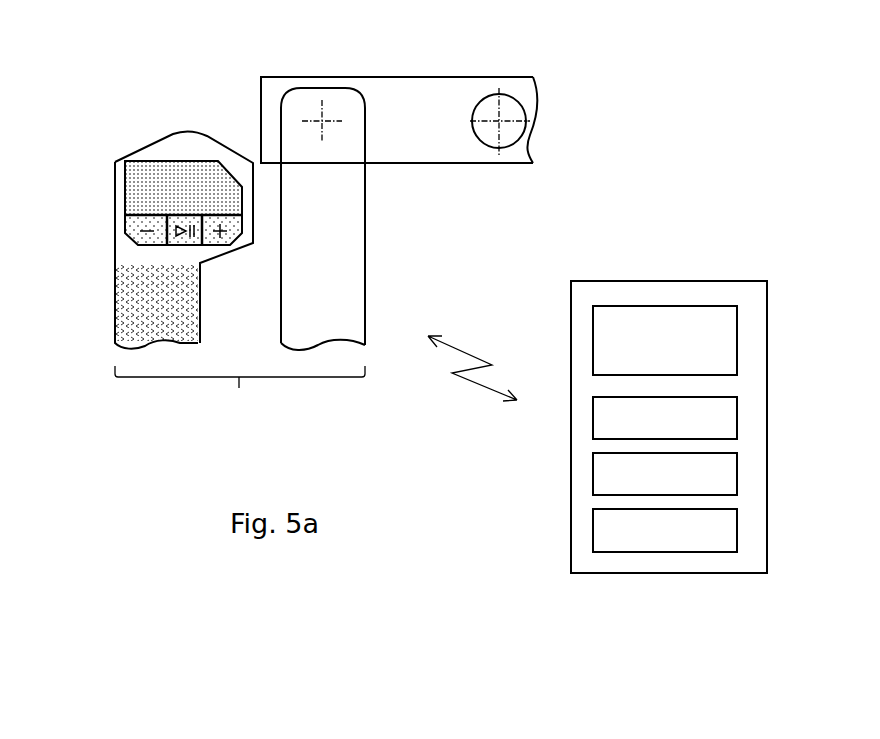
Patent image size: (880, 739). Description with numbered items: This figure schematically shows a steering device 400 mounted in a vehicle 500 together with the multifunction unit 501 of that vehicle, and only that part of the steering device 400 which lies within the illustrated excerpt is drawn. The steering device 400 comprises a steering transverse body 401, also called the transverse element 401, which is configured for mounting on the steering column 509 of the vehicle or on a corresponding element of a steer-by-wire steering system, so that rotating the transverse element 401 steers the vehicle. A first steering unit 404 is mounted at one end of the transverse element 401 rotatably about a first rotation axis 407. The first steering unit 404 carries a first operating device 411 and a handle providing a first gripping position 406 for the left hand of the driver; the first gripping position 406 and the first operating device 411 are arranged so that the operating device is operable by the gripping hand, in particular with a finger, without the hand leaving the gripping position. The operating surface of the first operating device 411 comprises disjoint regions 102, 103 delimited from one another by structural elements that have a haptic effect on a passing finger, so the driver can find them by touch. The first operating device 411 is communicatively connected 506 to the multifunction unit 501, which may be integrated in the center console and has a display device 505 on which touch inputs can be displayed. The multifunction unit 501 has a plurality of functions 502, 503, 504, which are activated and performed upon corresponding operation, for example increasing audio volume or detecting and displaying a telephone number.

The steering device 400 is at (84, 71).
The first steering unit 404 is at (240, 278).
The first operating device 411 is at (165, 161).
The region 102 is at (136, 181).
The region 103 is at (137, 228).
The first gripping position 406 is at (128, 298).
The first rotation axis 407 is at (318, 118).
The steering transverse body 401 is at (428, 90).
The steering column 509 is at (509, 148).
The communicative connection 506 is at (465, 350).
The vehicle 500 is at (670, 85).
The multifunction unit 501 is at (697, 280).
The display device 505 is at (738, 353).
The function 502 is at (738, 415).
The function 503 is at (738, 474).
The function 504 is at (738, 528).